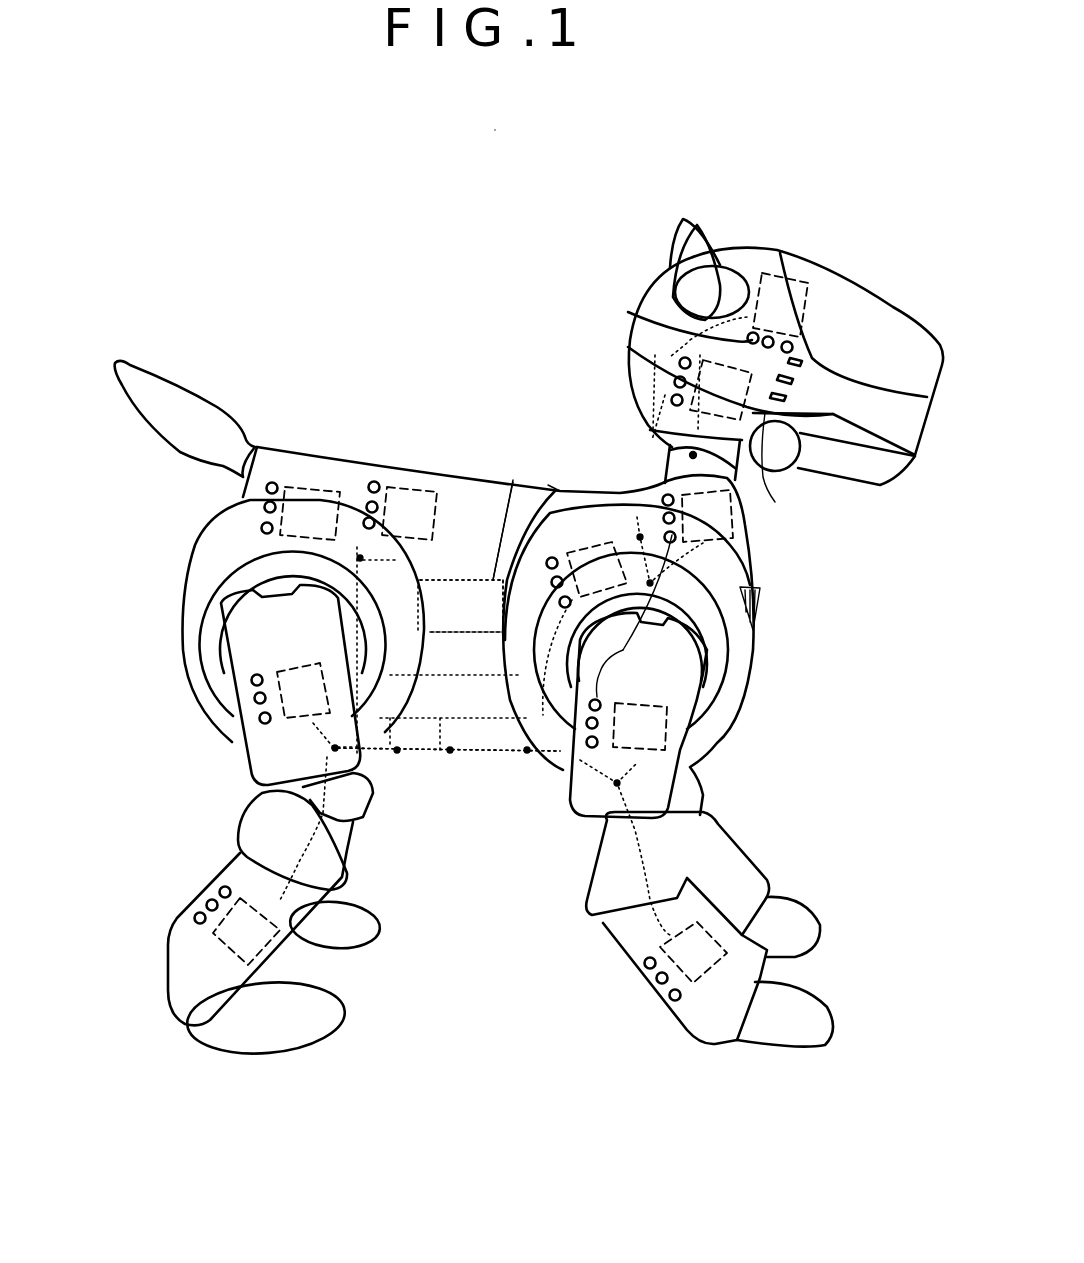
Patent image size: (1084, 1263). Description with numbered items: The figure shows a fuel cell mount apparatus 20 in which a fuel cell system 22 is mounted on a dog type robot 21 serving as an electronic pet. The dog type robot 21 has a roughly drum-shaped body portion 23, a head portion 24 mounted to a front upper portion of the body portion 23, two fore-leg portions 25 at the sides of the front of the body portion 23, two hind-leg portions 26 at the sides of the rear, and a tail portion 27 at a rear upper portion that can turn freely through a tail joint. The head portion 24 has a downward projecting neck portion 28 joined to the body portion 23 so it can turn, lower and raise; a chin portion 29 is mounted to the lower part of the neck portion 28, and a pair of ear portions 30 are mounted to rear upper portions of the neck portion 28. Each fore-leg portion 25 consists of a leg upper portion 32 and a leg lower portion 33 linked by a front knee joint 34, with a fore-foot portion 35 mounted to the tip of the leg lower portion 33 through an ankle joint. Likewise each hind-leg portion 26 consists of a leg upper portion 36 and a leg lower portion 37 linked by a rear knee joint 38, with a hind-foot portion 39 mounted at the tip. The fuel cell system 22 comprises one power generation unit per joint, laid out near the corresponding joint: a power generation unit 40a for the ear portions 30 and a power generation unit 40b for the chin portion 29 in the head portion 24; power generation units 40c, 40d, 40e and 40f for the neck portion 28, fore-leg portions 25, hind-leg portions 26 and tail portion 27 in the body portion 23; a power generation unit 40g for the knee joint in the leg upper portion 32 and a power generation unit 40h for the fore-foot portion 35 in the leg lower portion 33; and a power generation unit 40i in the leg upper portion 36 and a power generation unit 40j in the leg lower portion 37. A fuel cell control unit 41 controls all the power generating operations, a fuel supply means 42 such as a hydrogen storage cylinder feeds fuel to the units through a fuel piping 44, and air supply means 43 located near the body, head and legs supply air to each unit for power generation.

The fuel cell mount apparatus 20 is at (508, 208).
The dog type robot 21 is at (790, 667).
The fuel cell system 22 is at (464, 566).
The body portion 23 is at (503, 497).
The head portion 24 is at (749, 258).
The fore-leg portion 25 is at (497, 883).
The hind-leg portion 26 is at (128, 783).
The tail portion 27 is at (190, 392).
The neck portion 28 is at (673, 463).
The chin portion 29 is at (833, 467).
The ear portion 30 is at (675, 267).
The leg upper portion 32 is at (573, 812).
The leg lower portion 33 is at (617, 942).
The front knee joint 34 is at (673, 855).
The fore-foot portion 35 is at (815, 938).
The leg upper portion 36 is at (262, 760).
The leg lower portion 37 is at (237, 867).
The rear knee joint 38 is at (325, 852).
The hind-foot portion 39 is at (323, 1015).
The power generation unit 40a is at (808, 298).
The power generation unit 40b is at (763, 470).
The power generation unit 40c is at (735, 538).
The power generation unit 40d is at (625, 653).
The power generation unit 40e is at (405, 487).
The power generation unit 40f is at (305, 487).
The power generation unit 40g is at (687, 760).
The power generation unit 40h is at (713, 977).
The power generation unit 40i is at (290, 656).
The power generation unit 40j is at (222, 933).
The fuel cell control unit 41 is at (548, 485).
The fuel supply means 42 is at (490, 735).
The air supply means 43 is at (683, 358).
The fuel piping 44 is at (427, 748).